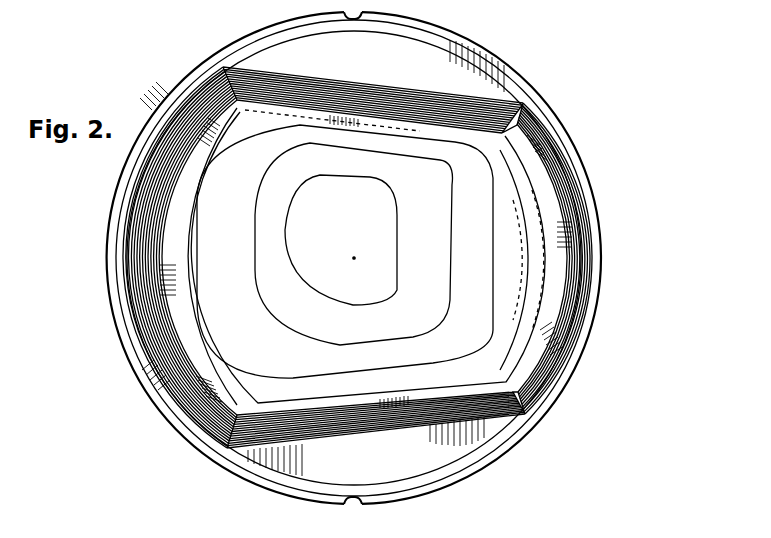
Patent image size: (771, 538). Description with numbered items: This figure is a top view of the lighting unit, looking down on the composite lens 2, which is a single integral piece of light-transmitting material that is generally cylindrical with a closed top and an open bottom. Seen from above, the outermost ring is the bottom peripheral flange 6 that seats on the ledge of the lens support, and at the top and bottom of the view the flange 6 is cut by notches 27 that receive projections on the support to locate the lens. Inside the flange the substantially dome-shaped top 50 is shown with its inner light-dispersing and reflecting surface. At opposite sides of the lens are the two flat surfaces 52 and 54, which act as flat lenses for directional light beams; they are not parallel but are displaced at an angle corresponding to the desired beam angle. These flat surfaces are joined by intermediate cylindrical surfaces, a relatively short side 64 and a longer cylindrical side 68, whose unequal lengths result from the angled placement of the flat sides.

The composite lens 2 is at (156, 89).
The bottom peripheral flange 6 is at (188, 432).
The notches 27 is at (360, 16).
The dome-shaped top 50 is at (484, 292).
The flat surface 52 is at (432, 81).
The flat surface 54 is at (400, 431).
The relatively short cylindrical side 64 is at (567, 235).
The longer cylindrical side 68 is at (163, 220).